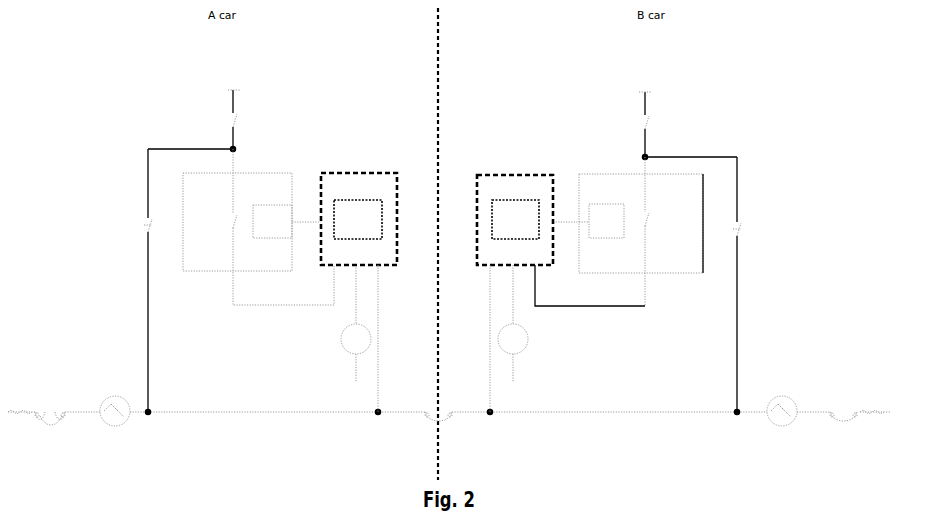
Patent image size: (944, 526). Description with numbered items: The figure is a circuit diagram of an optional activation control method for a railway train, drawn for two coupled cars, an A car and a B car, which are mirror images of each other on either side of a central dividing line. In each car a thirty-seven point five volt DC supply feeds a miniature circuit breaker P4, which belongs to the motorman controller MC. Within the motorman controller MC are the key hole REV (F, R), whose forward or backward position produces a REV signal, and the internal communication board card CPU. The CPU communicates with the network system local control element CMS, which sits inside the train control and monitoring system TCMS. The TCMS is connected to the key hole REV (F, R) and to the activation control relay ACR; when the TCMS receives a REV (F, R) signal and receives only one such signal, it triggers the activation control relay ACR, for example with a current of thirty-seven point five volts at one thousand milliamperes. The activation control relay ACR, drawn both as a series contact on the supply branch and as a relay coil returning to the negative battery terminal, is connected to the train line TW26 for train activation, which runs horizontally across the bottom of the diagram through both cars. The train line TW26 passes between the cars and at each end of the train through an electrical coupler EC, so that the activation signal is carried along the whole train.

The train line for train activation TW26 is at (449, 412).
The electrical coupler EC is at (464, 422).
The miniature circuit breaker P4 is at (441, 118).
The activation control relay ACR is at (441, 280).
The motorman controller MC is at (442, 223).
The key hole (forward, backward) REV is at (443, 227).
The internal communication board card of the motorman controller CPU is at (438, 221).
The train control and monitoring system TCMS is at (437, 289).
The network system local control element CMS is at (436, 219).